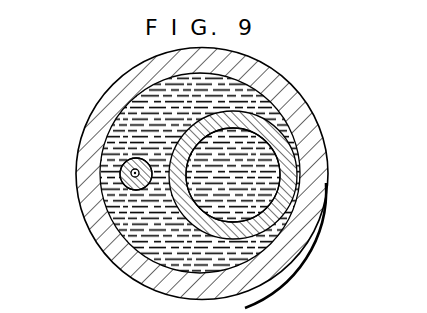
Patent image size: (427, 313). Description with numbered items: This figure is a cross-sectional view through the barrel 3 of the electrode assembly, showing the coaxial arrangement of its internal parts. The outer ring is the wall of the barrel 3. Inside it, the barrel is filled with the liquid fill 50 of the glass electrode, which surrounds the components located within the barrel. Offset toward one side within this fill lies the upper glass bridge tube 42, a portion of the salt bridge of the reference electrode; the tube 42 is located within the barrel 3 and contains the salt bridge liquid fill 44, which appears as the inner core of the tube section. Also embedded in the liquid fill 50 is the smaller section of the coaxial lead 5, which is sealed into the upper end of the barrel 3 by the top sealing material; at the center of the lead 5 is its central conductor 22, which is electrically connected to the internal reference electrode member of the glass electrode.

The barrel portion 3 is at (100, 113).
The liquid fill 50 is at (147, 108).
The upper glass bridge tube 42 is at (290, 133).
The salt bridge liquid fill 44 is at (245, 177).
The coaxial lead 5 is at (121, 177).
The central conductor 22 is at (120, 172).